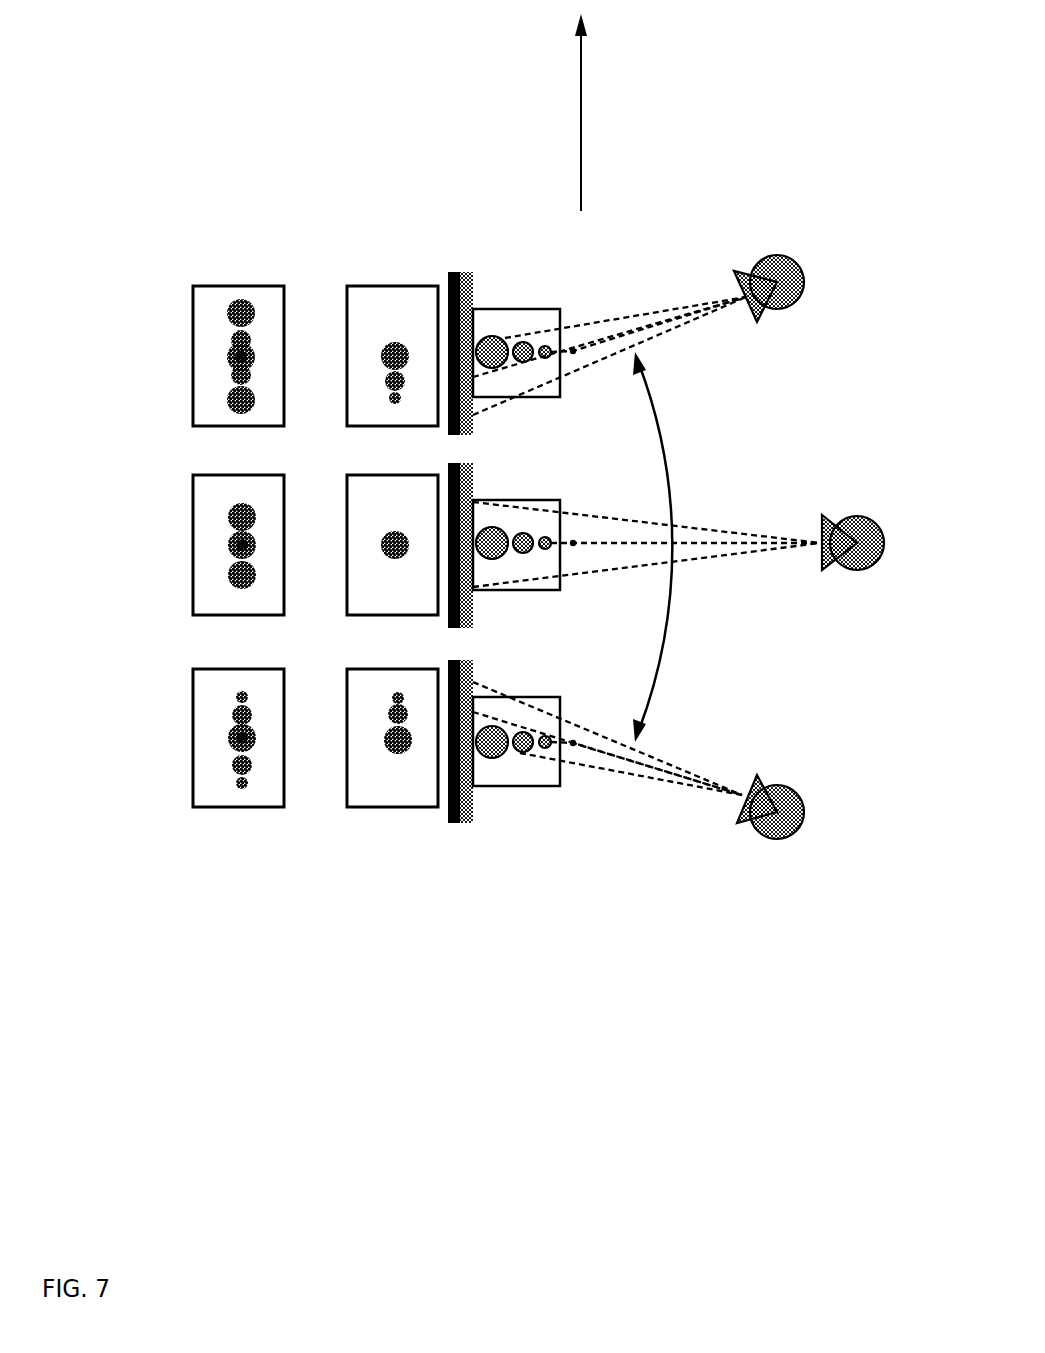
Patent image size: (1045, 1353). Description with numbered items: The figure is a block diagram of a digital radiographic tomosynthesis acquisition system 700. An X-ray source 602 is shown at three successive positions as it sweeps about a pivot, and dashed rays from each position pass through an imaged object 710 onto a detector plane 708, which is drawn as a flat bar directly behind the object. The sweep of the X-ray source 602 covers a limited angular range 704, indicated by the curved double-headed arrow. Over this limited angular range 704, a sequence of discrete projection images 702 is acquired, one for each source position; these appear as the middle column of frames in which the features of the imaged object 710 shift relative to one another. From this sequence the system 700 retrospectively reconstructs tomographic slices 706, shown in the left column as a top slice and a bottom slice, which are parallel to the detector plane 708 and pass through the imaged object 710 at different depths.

The digital radiographic tomosynthesis acquisition system 700 is at (488, 647).
The discrete projection images 702 is at (391, 826).
The limited angular range 704 is at (706, 547).
The tomographic slices 706 is at (260, 893).
The detector plane 708 is at (471, 840).
The imaged object 710 is at (532, 803).
The X-ray source 602 is at (814, 849).